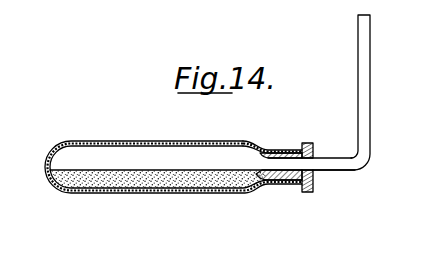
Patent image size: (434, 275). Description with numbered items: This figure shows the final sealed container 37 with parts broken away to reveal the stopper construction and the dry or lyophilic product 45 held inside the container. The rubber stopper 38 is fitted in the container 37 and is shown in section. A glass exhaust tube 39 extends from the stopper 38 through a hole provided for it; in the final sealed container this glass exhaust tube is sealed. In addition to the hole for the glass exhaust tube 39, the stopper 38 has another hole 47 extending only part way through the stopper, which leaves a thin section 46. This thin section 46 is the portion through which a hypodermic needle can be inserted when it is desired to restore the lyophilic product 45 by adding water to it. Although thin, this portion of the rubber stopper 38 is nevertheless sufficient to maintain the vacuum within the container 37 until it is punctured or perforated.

The container 37 is at (145, 141).
The dry or lyophilic product 45 is at (138, 183).
The stopper 38 is at (311, 143).
The hole 47 is at (281, 186).
The thin section 46 is at (311, 192).
The glass exhaust tube 39 is at (363, 73).